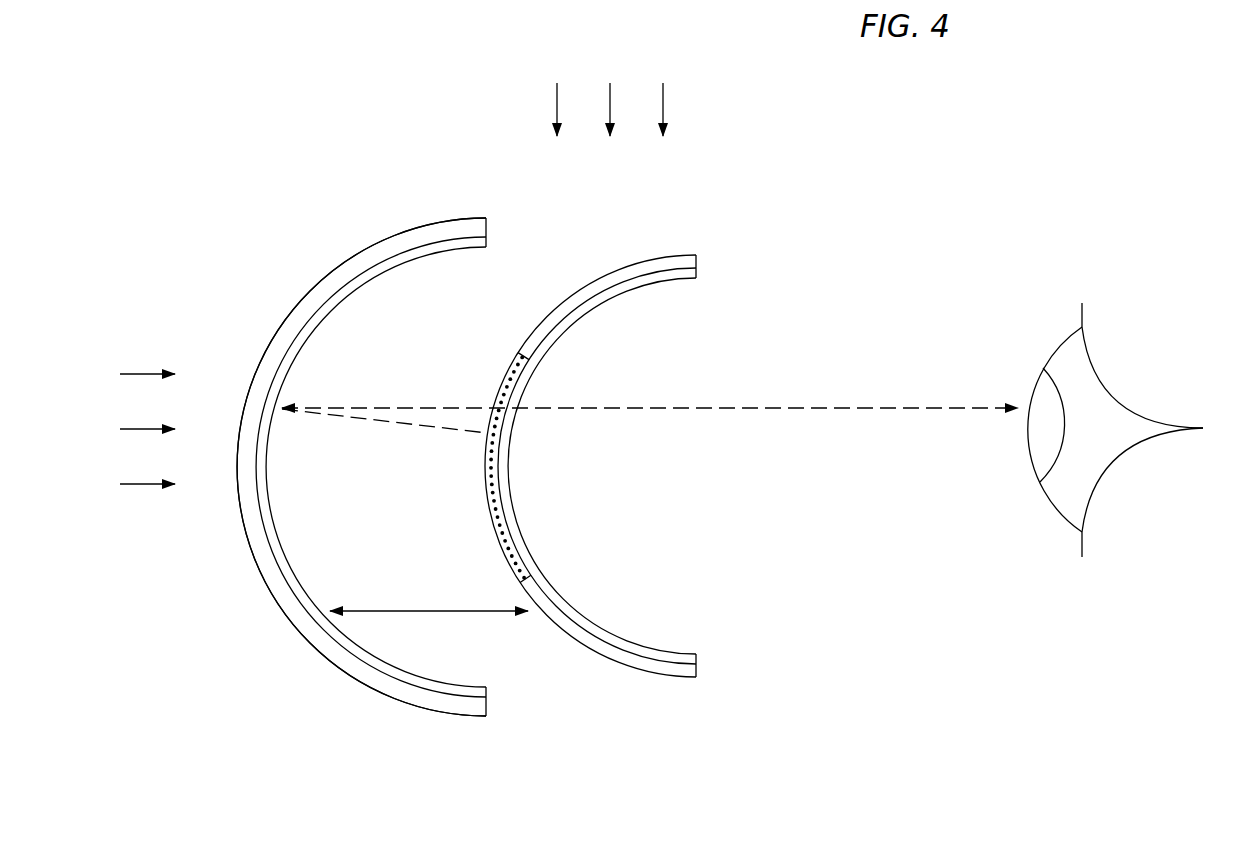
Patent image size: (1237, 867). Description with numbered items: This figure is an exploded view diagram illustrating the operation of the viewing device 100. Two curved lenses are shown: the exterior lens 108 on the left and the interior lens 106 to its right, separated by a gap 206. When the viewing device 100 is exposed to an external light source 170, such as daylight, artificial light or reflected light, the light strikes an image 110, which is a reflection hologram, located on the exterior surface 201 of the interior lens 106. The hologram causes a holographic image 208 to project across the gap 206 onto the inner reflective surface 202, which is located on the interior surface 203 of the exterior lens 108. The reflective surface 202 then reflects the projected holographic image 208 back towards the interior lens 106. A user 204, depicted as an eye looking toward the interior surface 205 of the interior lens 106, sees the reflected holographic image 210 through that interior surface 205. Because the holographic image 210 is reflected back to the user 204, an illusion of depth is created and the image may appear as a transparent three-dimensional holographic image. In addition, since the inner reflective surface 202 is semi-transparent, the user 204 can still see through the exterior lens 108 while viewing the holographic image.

The viewing device 100 is at (325, 170).
The interior lens 106 is at (597, 479).
The exterior lens 108 is at (413, 460).
The image (reflection hologram) 110 is at (490, 518).
The external light source 170 is at (663, 93).
The exterior surface of the interior lens 201 is at (622, 660).
The inner reflective surface 202 is at (278, 552).
The interior surface of the exterior lens 203 is at (402, 257).
The user 204 is at (1090, 407).
The interior surface of the interior lens 205 is at (665, 277).
The gap 206 is at (425, 612).
The holographic image 208 is at (410, 427).
The reflected holographic image 210 is at (450, 408).